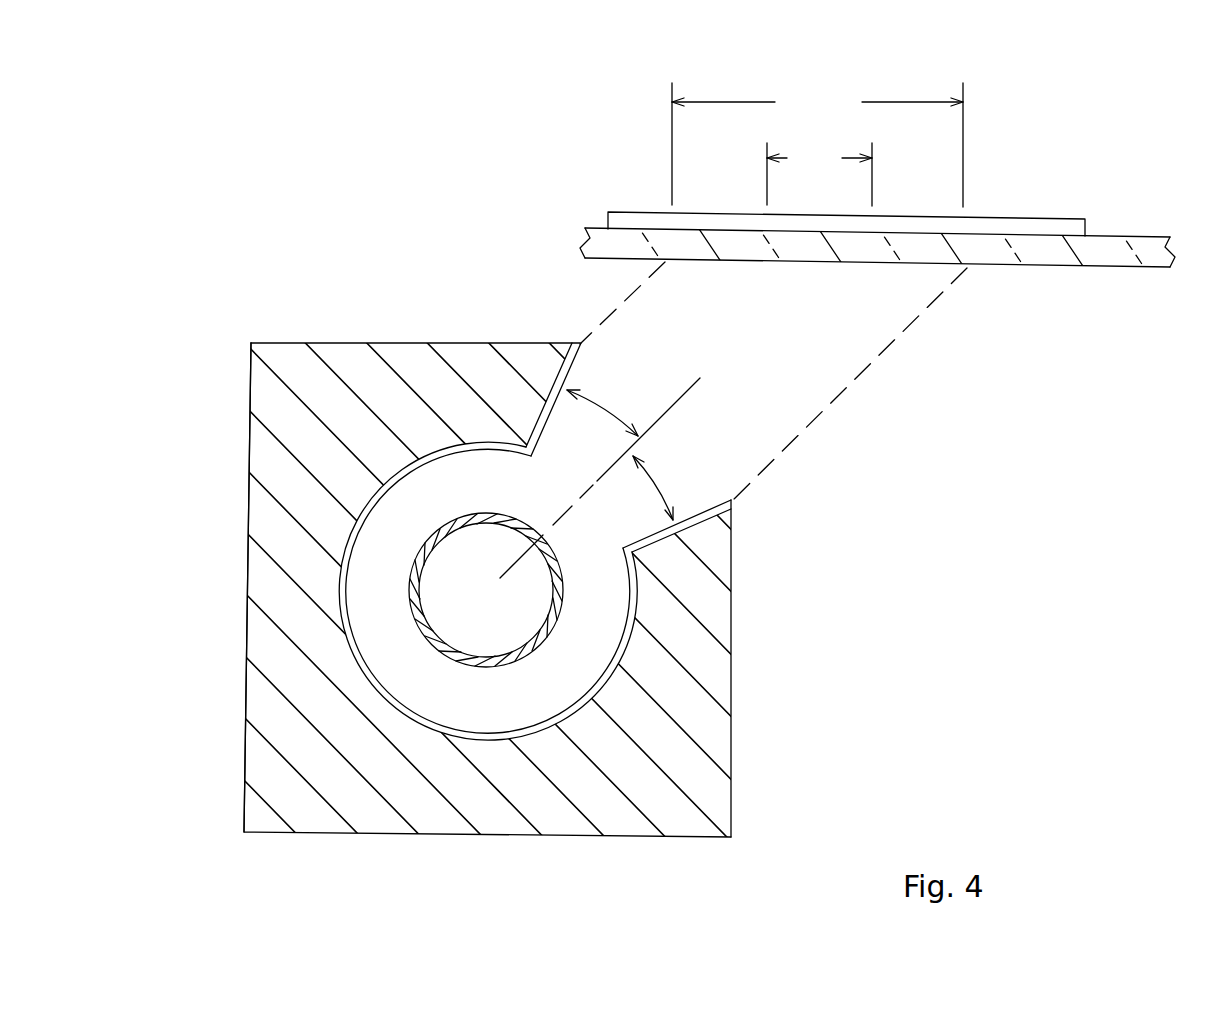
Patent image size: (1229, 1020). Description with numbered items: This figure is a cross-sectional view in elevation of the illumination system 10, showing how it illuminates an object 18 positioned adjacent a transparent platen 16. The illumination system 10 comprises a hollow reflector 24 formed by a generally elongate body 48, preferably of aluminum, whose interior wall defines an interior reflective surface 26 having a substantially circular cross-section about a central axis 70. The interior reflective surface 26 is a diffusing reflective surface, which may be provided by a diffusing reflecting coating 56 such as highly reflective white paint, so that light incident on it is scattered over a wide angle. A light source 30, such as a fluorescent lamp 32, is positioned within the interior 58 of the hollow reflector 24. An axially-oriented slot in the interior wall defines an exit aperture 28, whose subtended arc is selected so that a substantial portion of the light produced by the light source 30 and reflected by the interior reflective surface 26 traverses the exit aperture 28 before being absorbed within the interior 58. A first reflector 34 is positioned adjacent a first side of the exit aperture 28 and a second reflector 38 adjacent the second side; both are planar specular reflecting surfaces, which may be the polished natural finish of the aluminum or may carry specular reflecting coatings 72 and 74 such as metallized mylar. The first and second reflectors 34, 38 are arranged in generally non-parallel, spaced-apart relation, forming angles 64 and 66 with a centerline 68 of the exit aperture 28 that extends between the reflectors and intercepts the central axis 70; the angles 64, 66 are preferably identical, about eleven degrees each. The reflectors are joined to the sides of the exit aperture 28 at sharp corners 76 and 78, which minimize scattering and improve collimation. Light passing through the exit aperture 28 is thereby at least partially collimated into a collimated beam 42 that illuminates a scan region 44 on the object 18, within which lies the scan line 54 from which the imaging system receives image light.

The illumination system 10 is at (243, 96).
The transparent platen 16 is at (1160, 237).
The object 18 is at (1062, 212).
The hollow reflector 24 is at (365, 331).
The interior reflective surface 26 is at (363, 644).
The exit aperture 28 is at (731, 557).
The light source 30 is at (541, 647).
The fluorescent lamp 32 is at (472, 514).
The first reflector 34 is at (580, 356).
The second reflector 38 is at (736, 500).
The collimated beam 42 is at (875, 367).
The scan region 44 is at (817, 142).
The elongate body 48 is at (250, 437).
The scan line 54 is at (819, 173).
The diffusing reflecting coating 56 is at (470, 740).
The interior 58 is at (392, 589).
The angle 64 is at (592, 396).
The angle 66 is at (652, 477).
The centerline 68 is at (700, 378).
The central axis 70 is at (504, 578).
The specular reflecting coating 72 is at (541, 436).
The specular reflecting coating 74 is at (718, 505).
The sharp corner 76 is at (537, 458).
The sharp corner 78 is at (624, 549).